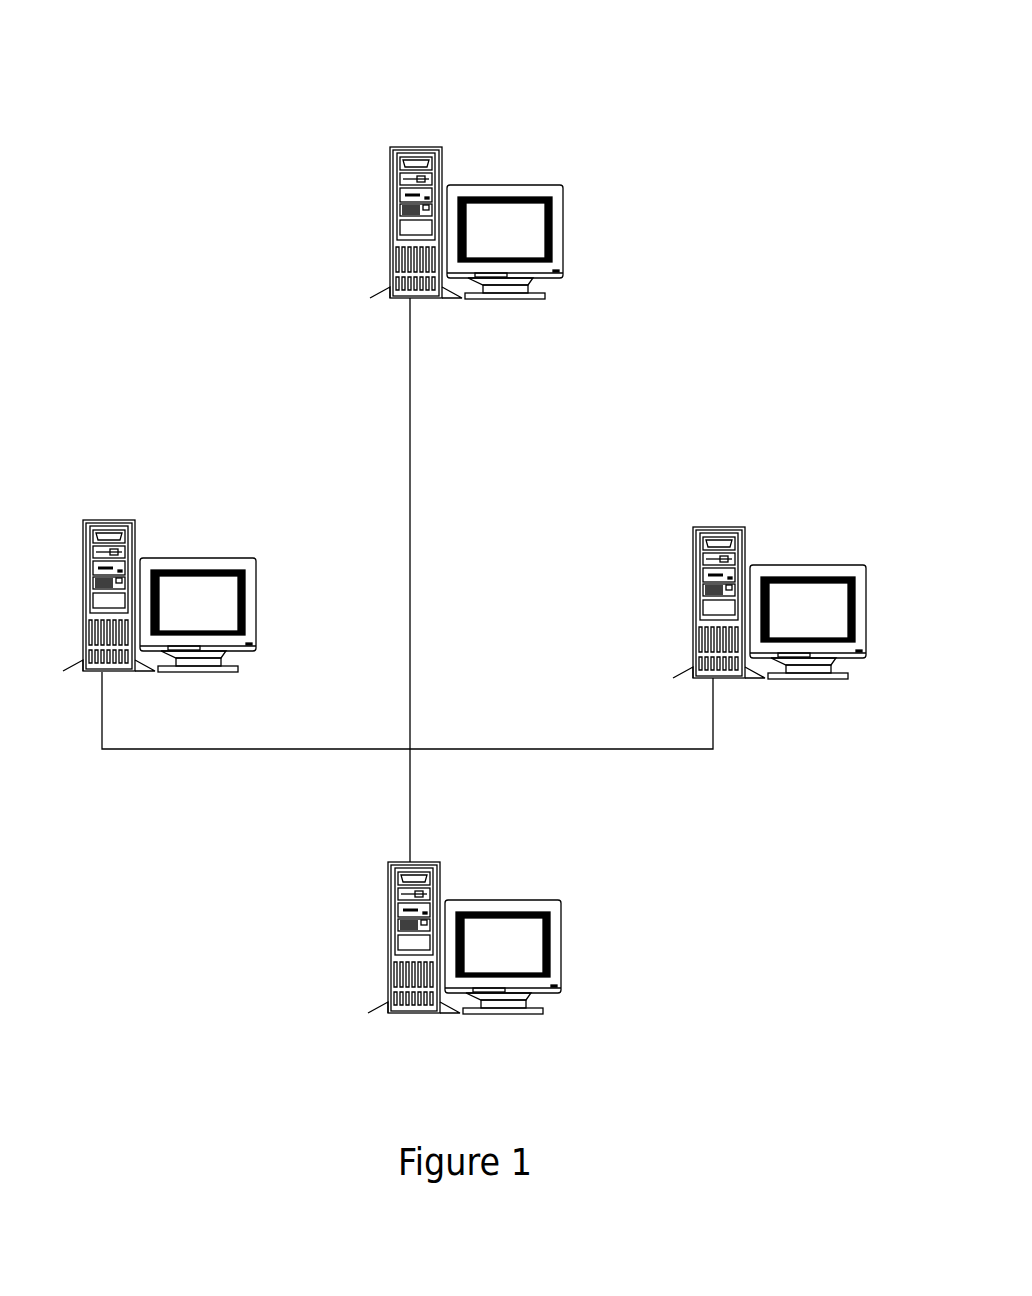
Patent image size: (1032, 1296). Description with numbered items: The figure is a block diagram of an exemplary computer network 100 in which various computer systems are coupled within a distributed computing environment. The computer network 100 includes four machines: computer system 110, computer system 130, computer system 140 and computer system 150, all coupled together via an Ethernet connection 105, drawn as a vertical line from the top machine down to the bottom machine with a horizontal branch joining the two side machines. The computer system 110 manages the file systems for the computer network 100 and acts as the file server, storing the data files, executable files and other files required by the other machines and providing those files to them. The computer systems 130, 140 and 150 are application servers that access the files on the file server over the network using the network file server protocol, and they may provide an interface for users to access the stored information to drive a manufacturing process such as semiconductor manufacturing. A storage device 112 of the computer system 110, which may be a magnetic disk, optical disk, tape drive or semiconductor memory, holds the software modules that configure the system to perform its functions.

The computer network 100 is at (489, 46).
The Ethernet connection 105 is at (456, 422).
The computer system 110 is at (487, 240).
The storage device 112 is at (387, 200).
The computer system 130 is at (324, 704).
The computer system 140 is at (574, 1046).
The computer system 150 is at (939, 708).